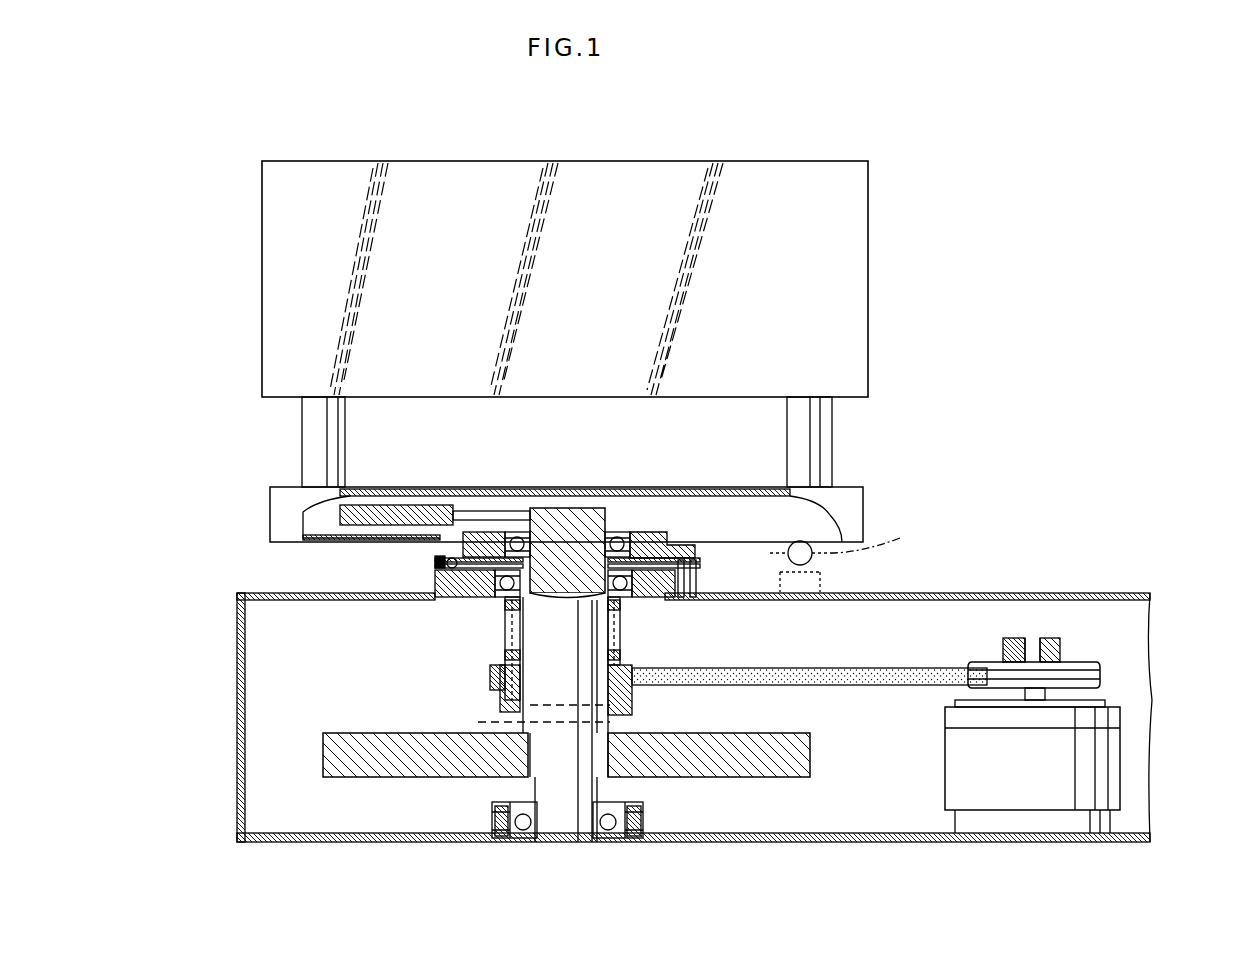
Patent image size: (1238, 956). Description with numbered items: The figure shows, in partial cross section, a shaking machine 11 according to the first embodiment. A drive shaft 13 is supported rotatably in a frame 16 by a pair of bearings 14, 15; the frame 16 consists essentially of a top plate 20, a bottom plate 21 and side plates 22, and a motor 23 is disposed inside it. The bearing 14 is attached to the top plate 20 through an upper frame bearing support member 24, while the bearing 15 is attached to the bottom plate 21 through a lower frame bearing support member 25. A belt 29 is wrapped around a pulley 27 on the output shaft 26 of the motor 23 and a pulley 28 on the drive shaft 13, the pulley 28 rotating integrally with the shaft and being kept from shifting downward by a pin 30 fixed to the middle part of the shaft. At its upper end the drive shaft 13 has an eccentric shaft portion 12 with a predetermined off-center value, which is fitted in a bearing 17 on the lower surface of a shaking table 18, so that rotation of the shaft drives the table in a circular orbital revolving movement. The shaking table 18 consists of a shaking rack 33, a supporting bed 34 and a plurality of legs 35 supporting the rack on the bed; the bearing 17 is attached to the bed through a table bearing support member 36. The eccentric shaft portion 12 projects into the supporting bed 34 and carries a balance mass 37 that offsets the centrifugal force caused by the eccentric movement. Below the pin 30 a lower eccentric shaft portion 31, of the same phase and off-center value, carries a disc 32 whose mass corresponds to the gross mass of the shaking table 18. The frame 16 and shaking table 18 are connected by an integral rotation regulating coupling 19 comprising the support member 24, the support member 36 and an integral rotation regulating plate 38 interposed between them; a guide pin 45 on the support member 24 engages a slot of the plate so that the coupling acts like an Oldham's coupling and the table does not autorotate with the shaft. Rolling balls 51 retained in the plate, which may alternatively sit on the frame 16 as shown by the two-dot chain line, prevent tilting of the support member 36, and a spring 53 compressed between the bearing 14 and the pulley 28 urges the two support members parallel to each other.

The shaking machine 11 is at (607, 117).
The eccentric shaft portion 12 is at (552, 510).
The drive shaft 13 is at (510, 625).
The bearing 14 is at (625, 592).
The bearing 15 is at (515, 845).
The frame 16 is at (653, 716).
The bearing 17 is at (622, 537).
The shaking table 18 is at (878, 305).
The integral rotation regulating coupling 19 is at (428, 554).
The top plate 20 is at (1060, 592).
The bottom plate 21 is at (915, 843).
The side plates 22 is at (237, 665).
The motor 23 is at (1105, 776).
The upper frame bearing support member 24 is at (505, 592).
The lower frame bearing support member 25 is at (645, 818).
The output shaft 26 is at (1032, 650).
The pulley 27 is at (1080, 664).
The pulley 28 is at (630, 672).
The belt 29 is at (835, 686).
The pin 30 is at (525, 720).
The lower eccentric shaft portion 31 is at (540, 762).
The disc 32 is at (682, 780).
The shaking rack 33 is at (272, 290).
The supporting bed 34 is at (272, 515).
The legs 35 is at (312, 442).
The table bearing support member 36 is at (483, 540).
The balance mass 37 is at (400, 508).
The integral rotation regulating plate 38 is at (440, 566).
The guide pin 45 is at (696, 575).
The rolling balls 51 is at (408, 632).
The spring 53 is at (500, 672).